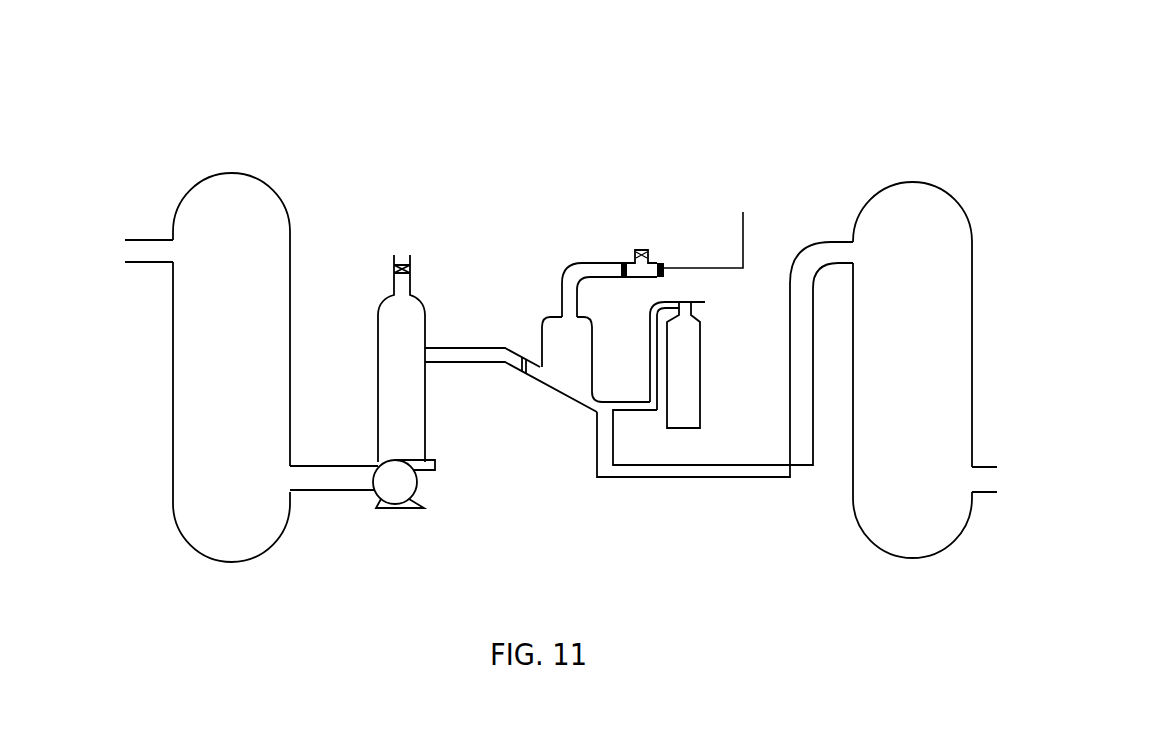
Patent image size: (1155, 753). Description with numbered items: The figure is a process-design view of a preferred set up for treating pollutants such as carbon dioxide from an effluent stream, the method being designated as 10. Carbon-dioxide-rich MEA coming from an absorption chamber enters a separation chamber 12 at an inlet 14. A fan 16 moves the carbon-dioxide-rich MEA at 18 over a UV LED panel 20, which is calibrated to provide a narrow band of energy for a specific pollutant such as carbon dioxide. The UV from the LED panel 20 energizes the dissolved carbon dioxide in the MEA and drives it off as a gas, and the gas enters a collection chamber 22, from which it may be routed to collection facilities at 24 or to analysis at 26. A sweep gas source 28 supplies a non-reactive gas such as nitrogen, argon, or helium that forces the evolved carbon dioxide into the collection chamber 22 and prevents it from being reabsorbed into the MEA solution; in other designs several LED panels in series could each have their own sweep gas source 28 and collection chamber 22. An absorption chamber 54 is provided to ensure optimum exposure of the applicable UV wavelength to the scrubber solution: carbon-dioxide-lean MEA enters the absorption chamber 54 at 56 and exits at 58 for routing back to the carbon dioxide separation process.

The method 10 is at (272, 107).
The separation chamber 12 is at (164, 405).
The inlet 14 is at (148, 250).
The fan 16 is at (376, 508).
The CO2 rich MEA flow 18 is at (462, 350).
The UV LED panel 20 is at (567, 405).
The collection chamber 22 is at (540, 330).
The collection facilities 24 is at (641, 247).
The analysis 26 is at (710, 214).
The sweep gas source 28 is at (687, 370).
The absorption chamber 54 is at (980, 370).
The absorption chamber inlet 56 is at (857, 248).
The absorption chamber outlet 58 is at (988, 476).